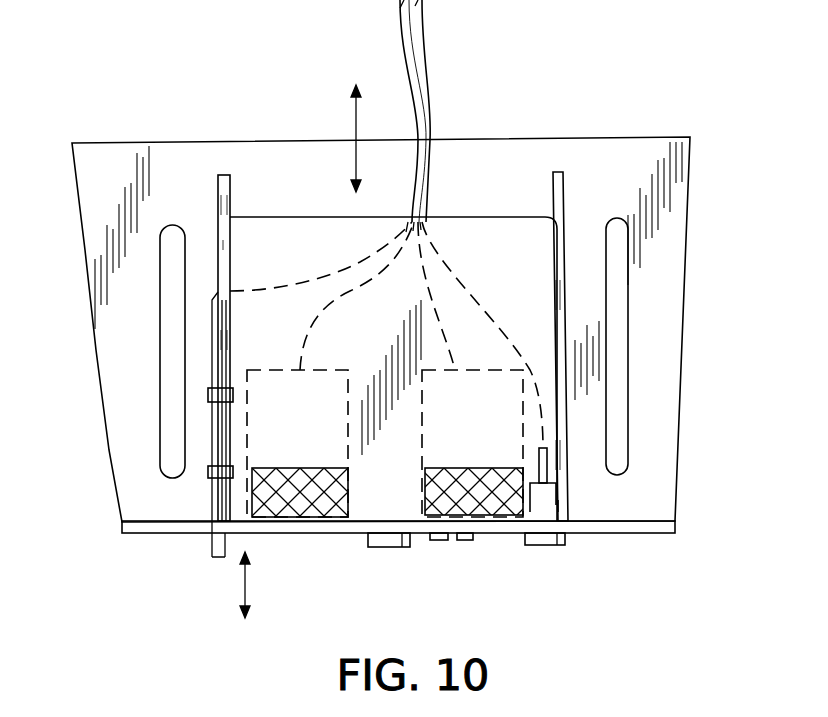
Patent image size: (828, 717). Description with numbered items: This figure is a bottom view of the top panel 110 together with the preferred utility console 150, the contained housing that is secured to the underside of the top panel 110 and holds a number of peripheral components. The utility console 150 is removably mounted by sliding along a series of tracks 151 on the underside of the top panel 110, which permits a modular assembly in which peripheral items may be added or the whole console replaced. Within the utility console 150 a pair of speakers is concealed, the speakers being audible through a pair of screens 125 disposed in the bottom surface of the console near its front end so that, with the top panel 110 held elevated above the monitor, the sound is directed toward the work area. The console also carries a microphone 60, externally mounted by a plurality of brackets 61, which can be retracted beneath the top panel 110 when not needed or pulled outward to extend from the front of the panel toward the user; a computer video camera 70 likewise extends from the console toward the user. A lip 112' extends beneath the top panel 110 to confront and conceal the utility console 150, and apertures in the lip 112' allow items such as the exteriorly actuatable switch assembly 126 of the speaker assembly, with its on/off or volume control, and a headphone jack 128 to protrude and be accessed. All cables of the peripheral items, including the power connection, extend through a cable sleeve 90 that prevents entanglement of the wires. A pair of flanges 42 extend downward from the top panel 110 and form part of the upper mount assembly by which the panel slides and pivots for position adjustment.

The top panel 110 is at (497, 155).
The lip 112' is at (398, 562).
The tracks 151 is at (218, 188).
The flanges 42 is at (162, 360).
The microphone 60 is at (213, 540).
The brackets 61 is at (208, 473).
The utility console 150 is at (285, 238).
The cable sleeve 90 is at (411, 47).
The screens 125 is at (328, 504).
The switch assembly 126 is at (388, 548).
The headphone jack 128 is at (438, 541).
The computer video camera 70 is at (545, 546).